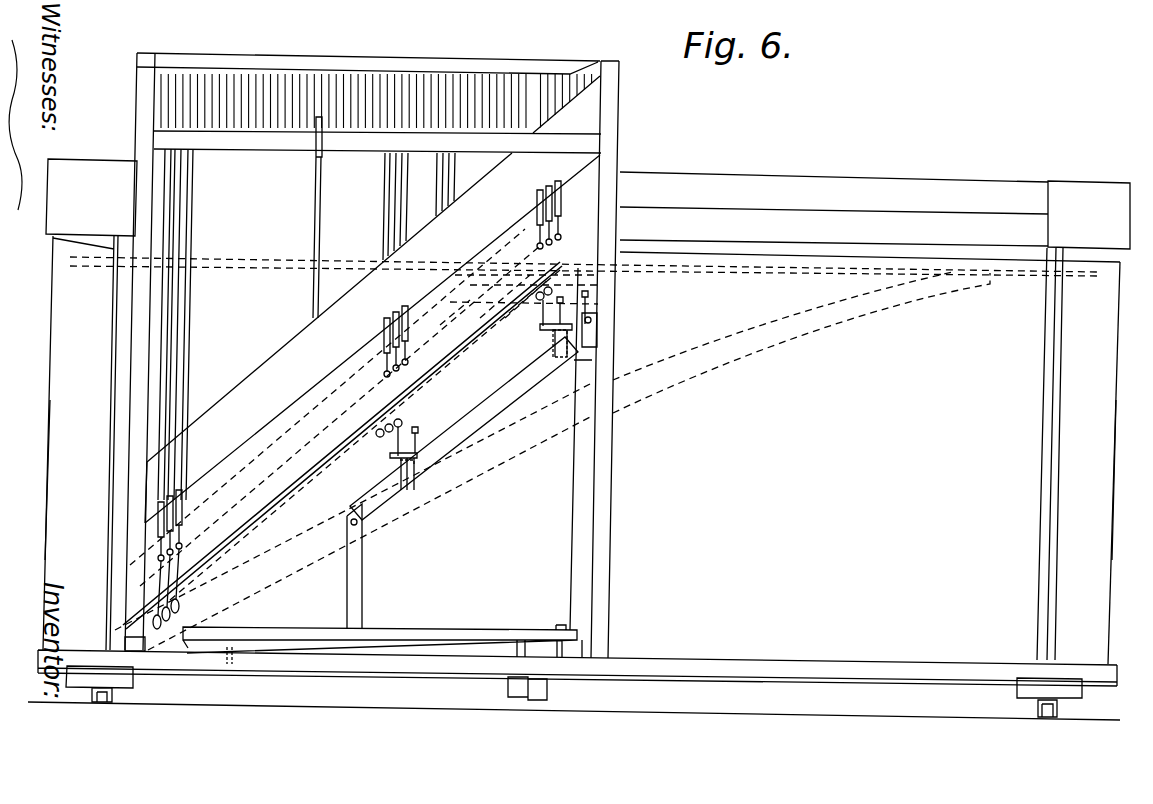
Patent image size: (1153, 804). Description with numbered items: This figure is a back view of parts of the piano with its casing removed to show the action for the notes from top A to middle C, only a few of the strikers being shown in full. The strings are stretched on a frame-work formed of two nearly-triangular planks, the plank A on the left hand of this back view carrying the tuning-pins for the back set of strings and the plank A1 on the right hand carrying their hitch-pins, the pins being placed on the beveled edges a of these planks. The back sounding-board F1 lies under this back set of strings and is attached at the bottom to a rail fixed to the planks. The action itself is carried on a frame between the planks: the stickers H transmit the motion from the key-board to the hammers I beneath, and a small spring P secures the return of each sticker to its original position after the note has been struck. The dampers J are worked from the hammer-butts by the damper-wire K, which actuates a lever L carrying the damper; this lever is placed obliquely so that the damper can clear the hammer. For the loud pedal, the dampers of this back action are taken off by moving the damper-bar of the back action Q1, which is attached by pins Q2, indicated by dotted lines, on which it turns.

The plank A is at (50, 378).
The beveled edge a is at (48, 514).
The plank A1 is at (1114, 411).
The stickers H is at (408, 183).
The spring P is at (318, 146).
The hammers I is at (377, 436).
The dampers J is at (418, 430).
The damper-wire K is at (404, 428).
The lever L is at (548, 327).
The damper-bar of the back action Q1 is at (464, 428).
The pins Q2 is at (592, 647).
The back sounding-board F1 is at (801, 373).